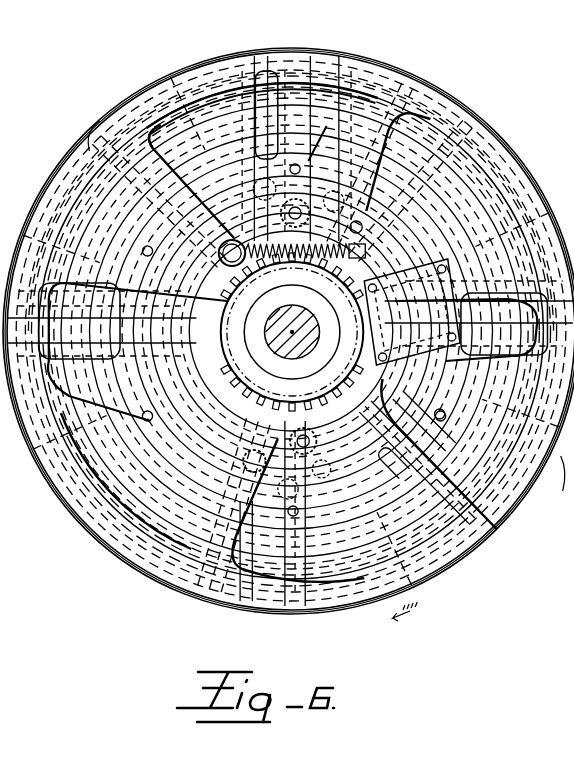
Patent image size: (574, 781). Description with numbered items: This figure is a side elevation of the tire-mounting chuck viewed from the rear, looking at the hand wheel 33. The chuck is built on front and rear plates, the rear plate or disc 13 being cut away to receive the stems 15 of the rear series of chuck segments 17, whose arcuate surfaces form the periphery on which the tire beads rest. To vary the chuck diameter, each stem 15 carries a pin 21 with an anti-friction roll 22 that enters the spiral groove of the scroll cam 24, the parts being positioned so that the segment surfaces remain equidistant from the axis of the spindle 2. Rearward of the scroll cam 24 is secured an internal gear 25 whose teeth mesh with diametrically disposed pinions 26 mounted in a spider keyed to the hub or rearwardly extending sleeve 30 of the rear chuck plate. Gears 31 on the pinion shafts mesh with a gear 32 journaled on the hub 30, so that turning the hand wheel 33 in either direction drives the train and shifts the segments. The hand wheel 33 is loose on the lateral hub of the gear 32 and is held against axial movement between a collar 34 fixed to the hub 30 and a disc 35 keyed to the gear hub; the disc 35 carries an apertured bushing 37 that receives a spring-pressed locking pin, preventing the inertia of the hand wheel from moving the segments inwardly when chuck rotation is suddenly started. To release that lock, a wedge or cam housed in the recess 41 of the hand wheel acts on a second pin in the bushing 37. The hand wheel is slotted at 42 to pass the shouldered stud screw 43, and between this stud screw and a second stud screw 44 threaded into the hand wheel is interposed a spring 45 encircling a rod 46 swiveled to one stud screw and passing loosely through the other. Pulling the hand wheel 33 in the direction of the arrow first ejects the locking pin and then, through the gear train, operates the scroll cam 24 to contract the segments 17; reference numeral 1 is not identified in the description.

The machine 1 is at (62, 512).
The spindle 2 is at (281, 325).
The rear plate or disc 13 is at (452, 205).
The stems 15 is at (90, 252).
The chuck segments 17 is at (118, 110).
The pins 21 is at (462, 265).
The anti-friction rolls 22 is at (402, 168).
The scroll cam 24 is at (323, 125).
The internal gear 25 is at (165, 235).
The pinions 26 is at (220, 172).
The hub or rearwardly extending sleeve 30 is at (292, 332).
The gears 31 is at (326, 160).
The gear 32 is at (339, 334).
The hand wheel 33 is at (200, 72).
The collar 34 is at (343, 330).
The disc 35 is at (425, 442).
The apertured bushing 37 is at (455, 296).
The recess 41 is at (462, 290).
The slot 42 is at (355, 228).
The shouldered stud screw 43 is at (344, 262).
The second stud screw 44 is at (250, 268).
The spring 45 is at (20, 212).
The rod 46 is at (22, 230).